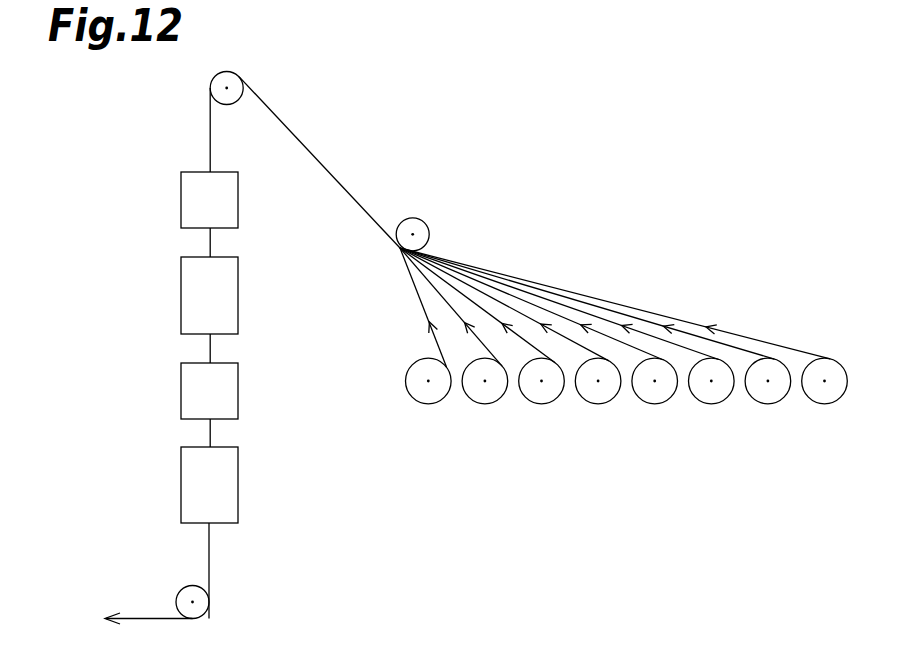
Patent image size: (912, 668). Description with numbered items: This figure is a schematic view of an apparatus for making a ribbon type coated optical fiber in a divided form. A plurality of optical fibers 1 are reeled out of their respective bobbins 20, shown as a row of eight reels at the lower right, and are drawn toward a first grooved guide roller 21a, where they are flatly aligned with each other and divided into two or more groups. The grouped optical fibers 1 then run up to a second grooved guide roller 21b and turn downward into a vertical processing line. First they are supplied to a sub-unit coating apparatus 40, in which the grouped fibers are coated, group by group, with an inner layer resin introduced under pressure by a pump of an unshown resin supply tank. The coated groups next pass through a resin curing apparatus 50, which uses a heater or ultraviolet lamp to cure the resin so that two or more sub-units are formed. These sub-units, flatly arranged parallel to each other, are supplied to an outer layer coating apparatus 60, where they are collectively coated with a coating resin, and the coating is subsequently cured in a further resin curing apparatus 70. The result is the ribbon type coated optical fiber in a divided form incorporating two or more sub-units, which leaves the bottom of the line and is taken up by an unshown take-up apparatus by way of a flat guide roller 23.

The optical fibers 1 is at (210, 133).
The bobbins 20 is at (845, 426).
The grooved guide roller 21a is at (422, 219).
The grooved guide roller 21b is at (233, 73).
The flat guide roller 23 is at (208, 603).
The sub-unit coating apparatus 40 is at (238, 197).
The resin curing apparatus 50 is at (238, 294).
The outer layer coating apparatus 60 is at (238, 387).
The resin curing apparatus 70 is at (238, 485).